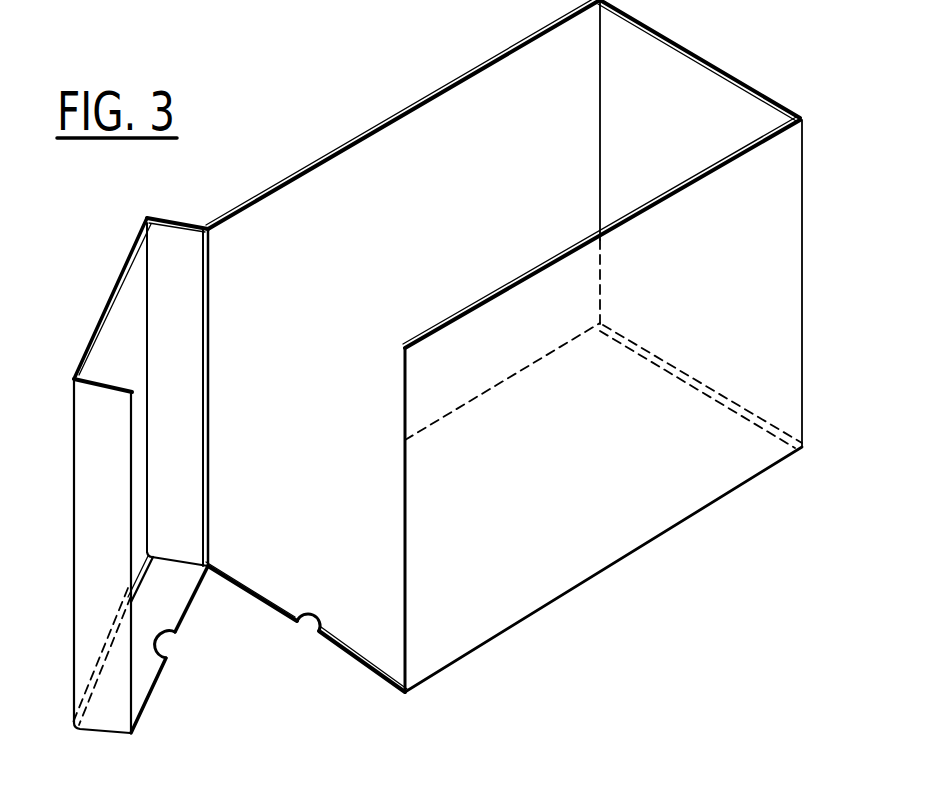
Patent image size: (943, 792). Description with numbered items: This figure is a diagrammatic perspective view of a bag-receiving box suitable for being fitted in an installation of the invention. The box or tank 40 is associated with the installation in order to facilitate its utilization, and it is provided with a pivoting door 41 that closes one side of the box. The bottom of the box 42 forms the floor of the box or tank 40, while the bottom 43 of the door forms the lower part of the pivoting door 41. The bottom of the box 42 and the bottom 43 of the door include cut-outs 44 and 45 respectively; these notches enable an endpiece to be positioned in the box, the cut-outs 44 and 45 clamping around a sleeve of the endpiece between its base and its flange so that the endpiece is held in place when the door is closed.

The box or tank 40 is at (454, 366).
The pivoting door 41 is at (174, 242).
The bottom of the box 42 is at (383, 648).
The bottom of the door 43 is at (148, 556).
The cut-out 44 is at (299, 626).
The cut-out 45 is at (172, 641).